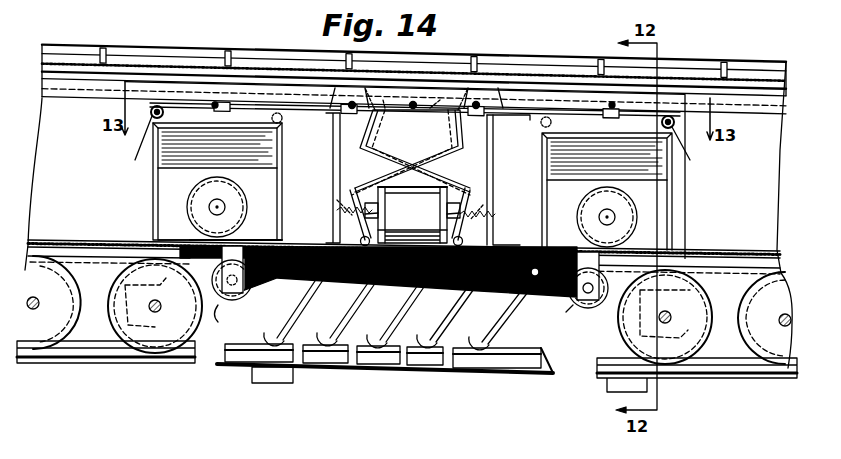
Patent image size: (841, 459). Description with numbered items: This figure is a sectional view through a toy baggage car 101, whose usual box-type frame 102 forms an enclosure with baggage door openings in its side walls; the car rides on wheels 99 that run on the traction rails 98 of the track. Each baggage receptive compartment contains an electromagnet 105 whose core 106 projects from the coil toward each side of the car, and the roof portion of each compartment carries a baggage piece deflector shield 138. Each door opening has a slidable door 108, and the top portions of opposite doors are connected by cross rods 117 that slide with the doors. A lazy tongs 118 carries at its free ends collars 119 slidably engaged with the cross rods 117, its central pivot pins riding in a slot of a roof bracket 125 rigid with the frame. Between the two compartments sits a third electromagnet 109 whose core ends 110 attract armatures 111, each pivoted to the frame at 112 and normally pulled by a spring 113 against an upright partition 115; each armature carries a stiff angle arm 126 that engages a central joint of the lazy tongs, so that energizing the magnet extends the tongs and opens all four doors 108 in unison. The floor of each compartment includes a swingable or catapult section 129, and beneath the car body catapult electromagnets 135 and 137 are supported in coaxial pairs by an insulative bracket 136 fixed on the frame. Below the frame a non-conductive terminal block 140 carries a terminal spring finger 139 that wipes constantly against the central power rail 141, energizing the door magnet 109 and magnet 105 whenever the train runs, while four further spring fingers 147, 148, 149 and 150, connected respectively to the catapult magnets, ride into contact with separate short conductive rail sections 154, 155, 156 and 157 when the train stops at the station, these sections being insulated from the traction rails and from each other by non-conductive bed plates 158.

The car 101 is at (172, 40).
The frame 102 is at (778, 191).
The traction rail 98 is at (85, 358).
The wheel 99 is at (158, 352).
The electromagnet 105 is at (240, 200).
The core 106 is at (210, 208).
The slidable door 108 is at (150, 173).
The third electromagnet 109 is at (432, 195).
The core end 110 is at (440, 214).
The armature 111 is at (352, 192).
The pivot 112 is at (360, 238).
The spring 113 is at (345, 208).
The upright partition 115 is at (334, 148).
The cross rod 117 is at (270, 116).
The lazy tongs 118 is at (505, 110).
The collar 119 is at (152, 120).
The roof bracket 125 is at (500, 121).
The angle arm 126 is at (428, 134).
The swingable section 129 is at (248, 240).
The catapult electromagnet 135 is at (221, 324).
The insulative bracket 136 is at (233, 288).
The catapult electromagnet 137 is at (578, 306).
The baggage piece deflector shield 138 is at (412, 153).
The terminal spring finger 139 is at (395, 315).
The terminal block 140 is at (345, 284).
The power rail 141 is at (392, 368).
The spring finger 147 is at (293, 312).
The spring finger 148 is at (345, 313).
The spring finger 149 is at (444, 316).
The spring finger 150 is at (495, 320).
The electrically conductive rail section 154 is at (236, 358).
The electrically conductive rail section 155 is at (320, 360).
The electrically conductive rail section 156 is at (432, 367).
The electrically conductive rail section 157 is at (500, 364).
The bed plate 158 is at (354, 370).